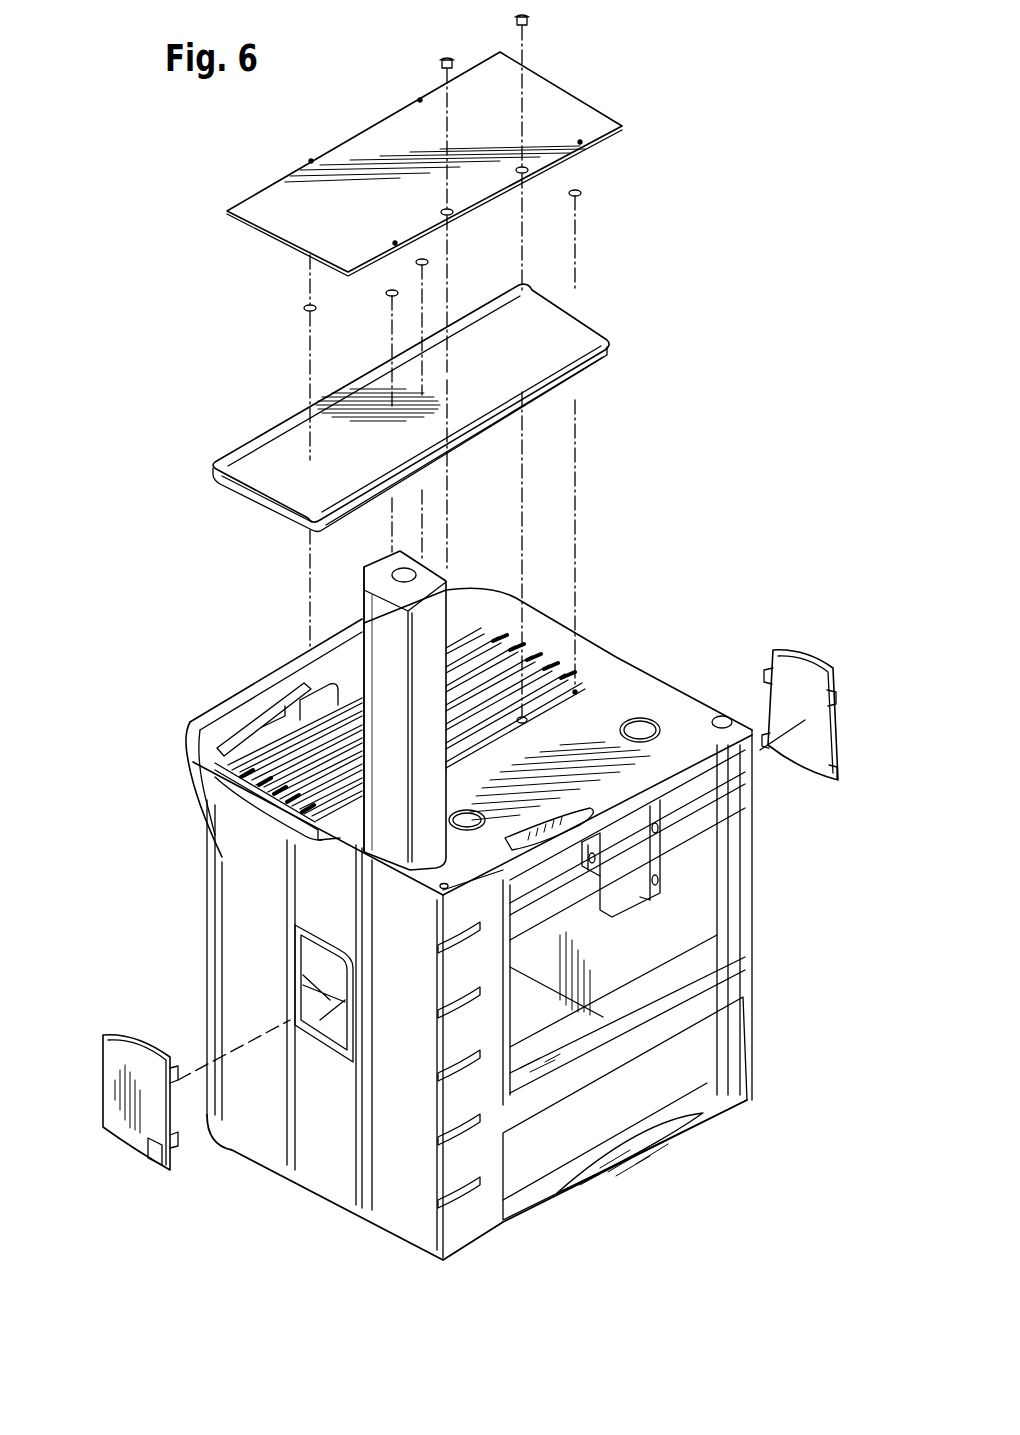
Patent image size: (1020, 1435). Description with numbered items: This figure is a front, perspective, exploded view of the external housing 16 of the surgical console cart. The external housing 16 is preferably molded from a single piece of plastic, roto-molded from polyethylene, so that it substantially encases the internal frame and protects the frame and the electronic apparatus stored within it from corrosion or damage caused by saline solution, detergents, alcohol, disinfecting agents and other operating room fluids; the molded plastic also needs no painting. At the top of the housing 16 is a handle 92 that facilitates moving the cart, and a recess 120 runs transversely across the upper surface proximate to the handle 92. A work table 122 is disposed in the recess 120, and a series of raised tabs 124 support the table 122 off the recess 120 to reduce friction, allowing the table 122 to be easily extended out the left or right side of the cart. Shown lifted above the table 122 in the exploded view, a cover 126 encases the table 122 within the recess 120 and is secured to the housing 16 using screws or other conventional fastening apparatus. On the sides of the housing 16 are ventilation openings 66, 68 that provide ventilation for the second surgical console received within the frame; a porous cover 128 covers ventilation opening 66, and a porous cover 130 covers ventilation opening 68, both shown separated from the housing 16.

The external housing 16 is at (628, 693).
The ventilation opening 66 is at (340, 1022).
The ventilation opening 68 is at (623, 840).
The handle 92 is at (235, 705).
The recess 120 is at (215, 775).
The work table 122 is at (505, 369).
The raised tabs 124 is at (545, 660).
The cover 126 is at (378, 214).
The porous cover 128 is at (130, 1061).
The porous cover 130 is at (810, 660).